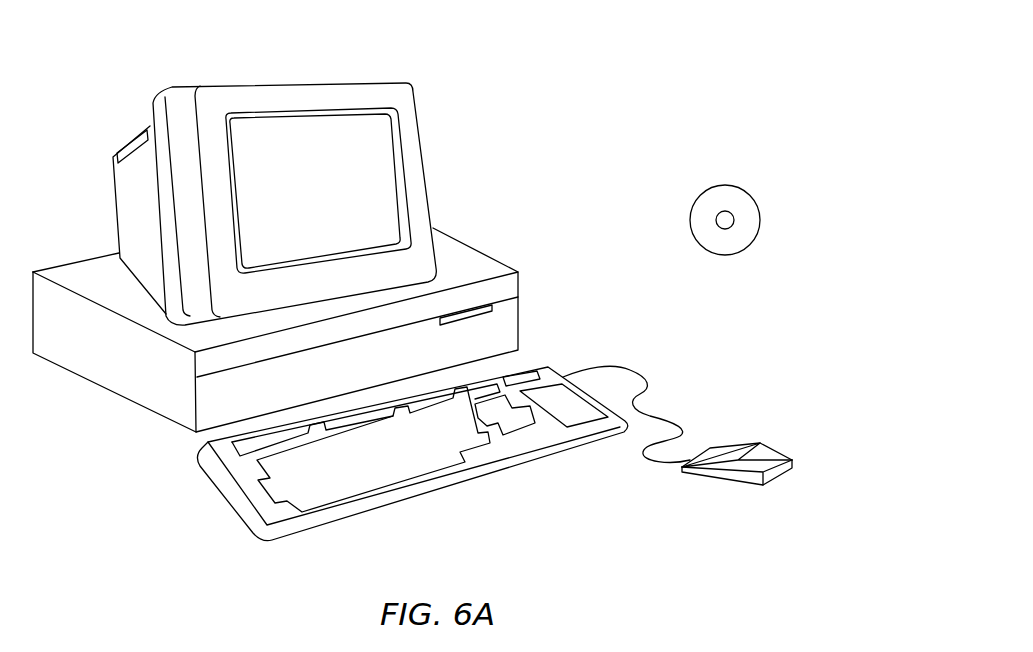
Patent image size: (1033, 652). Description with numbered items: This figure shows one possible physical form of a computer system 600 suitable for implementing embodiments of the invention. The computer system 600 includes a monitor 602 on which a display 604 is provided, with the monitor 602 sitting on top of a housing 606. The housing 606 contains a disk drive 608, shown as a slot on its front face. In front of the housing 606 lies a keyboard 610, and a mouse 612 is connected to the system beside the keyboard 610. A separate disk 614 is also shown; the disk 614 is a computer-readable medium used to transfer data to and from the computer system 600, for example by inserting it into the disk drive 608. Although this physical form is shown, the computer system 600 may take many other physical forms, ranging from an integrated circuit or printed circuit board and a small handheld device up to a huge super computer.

The computer system 600 is at (641, 52).
The monitor 602 is at (431, 205).
The display 604 is at (387, 152).
The housing 606 is at (160, 415).
The disk drive 608 is at (493, 303).
The keyboard 610 is at (417, 497).
The mouse 612 is at (780, 452).
The disk 614 is at (742, 187).